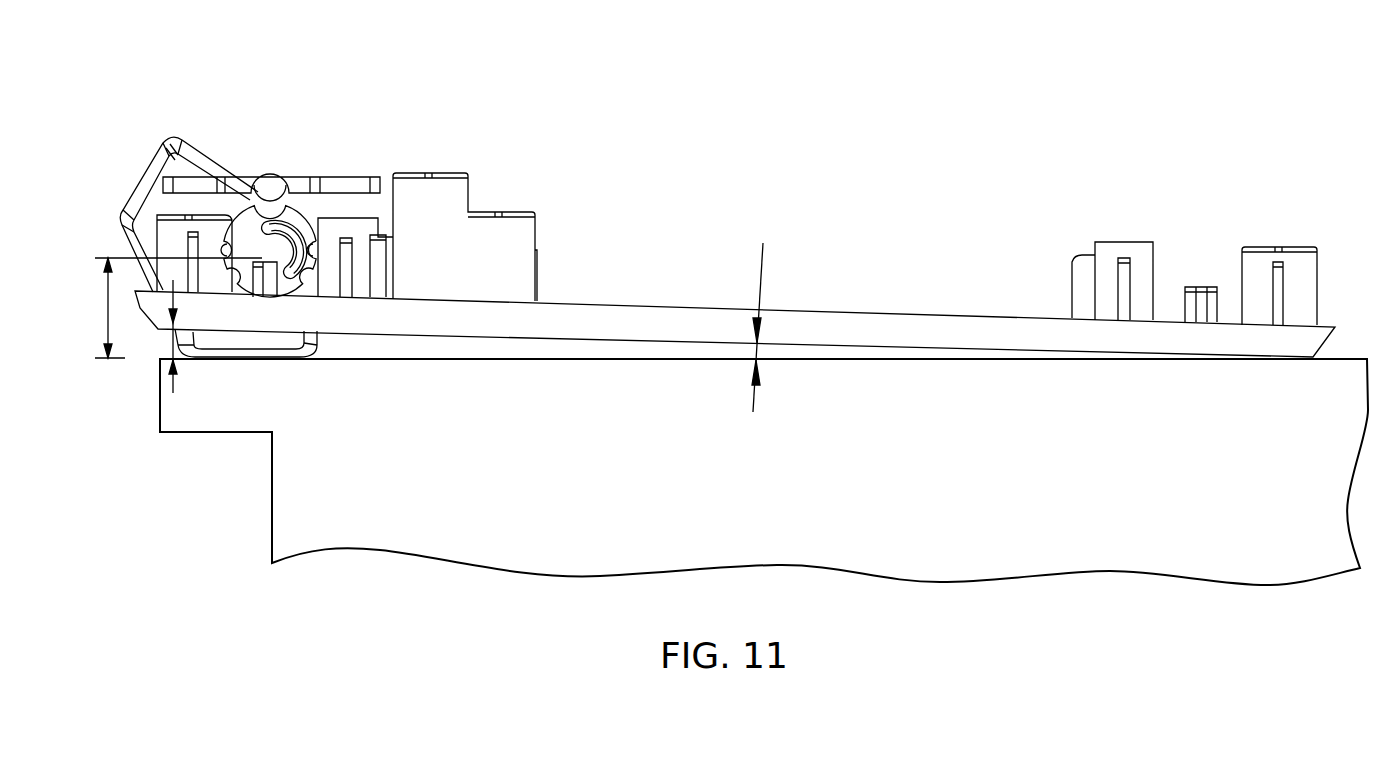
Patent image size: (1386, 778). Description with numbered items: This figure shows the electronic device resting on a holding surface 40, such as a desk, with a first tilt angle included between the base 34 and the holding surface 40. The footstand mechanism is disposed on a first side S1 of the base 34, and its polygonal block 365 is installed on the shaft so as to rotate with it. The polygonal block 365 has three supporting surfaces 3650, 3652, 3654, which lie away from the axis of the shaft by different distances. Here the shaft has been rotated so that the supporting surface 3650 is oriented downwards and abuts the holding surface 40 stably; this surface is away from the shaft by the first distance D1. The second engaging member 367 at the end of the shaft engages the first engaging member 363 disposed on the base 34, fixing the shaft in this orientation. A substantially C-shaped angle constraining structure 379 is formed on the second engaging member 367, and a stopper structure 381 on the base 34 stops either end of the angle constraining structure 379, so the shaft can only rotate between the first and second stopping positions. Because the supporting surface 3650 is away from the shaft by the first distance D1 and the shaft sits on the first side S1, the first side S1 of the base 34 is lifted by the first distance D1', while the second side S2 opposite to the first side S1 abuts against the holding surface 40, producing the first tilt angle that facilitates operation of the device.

The supporting surface 3654 is at (147, 170).
The polygonal block 365 is at (180, 165).
The second engaging member 367 is at (240, 212).
The angle constraining structure 379 is at (282, 235).
The first engaging member 363 is at (372, 192).
The supporting surface 3652 is at (124, 245).
The stopper structure 381 is at (262, 298).
The supporting surface 3650 is at (298, 360).
The base 34 is at (958, 318).
The holding surface 40 is at (548, 360).
The first distance D1 is at (166, 308).
The first distance D1' is at (189, 338).
The first side S1 is at (158, 322).
The second side S2 is at (1320, 352).